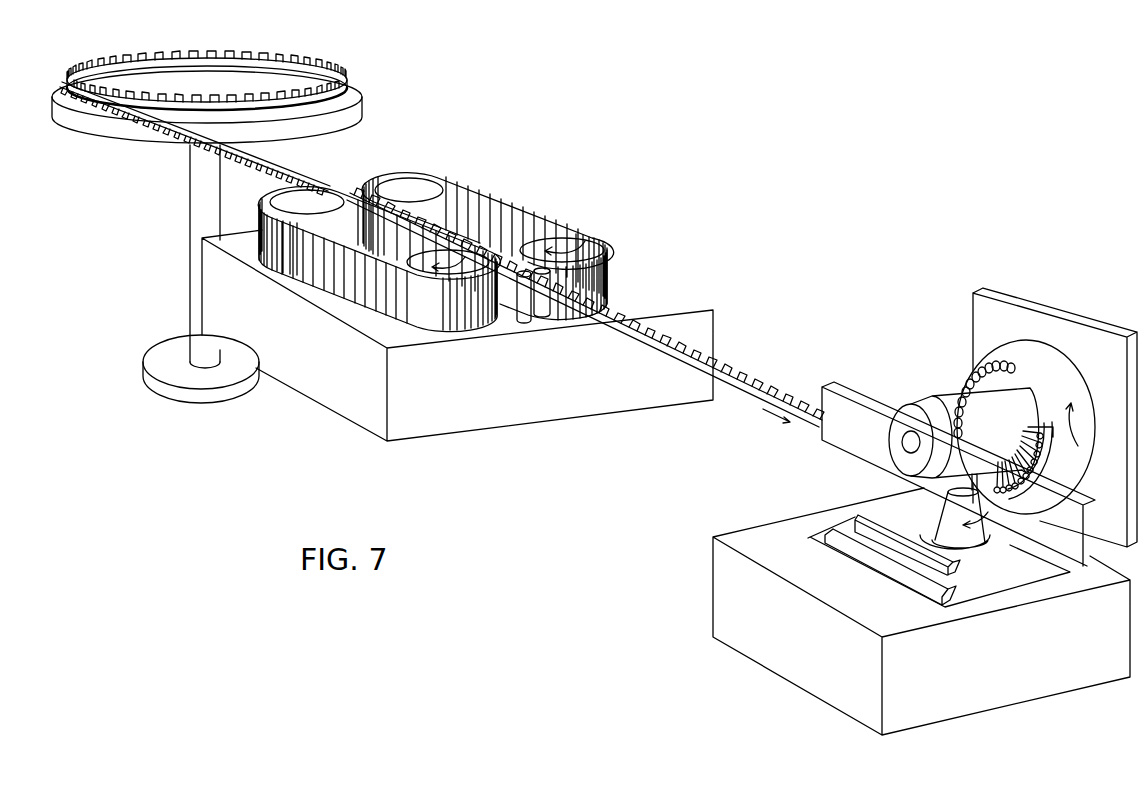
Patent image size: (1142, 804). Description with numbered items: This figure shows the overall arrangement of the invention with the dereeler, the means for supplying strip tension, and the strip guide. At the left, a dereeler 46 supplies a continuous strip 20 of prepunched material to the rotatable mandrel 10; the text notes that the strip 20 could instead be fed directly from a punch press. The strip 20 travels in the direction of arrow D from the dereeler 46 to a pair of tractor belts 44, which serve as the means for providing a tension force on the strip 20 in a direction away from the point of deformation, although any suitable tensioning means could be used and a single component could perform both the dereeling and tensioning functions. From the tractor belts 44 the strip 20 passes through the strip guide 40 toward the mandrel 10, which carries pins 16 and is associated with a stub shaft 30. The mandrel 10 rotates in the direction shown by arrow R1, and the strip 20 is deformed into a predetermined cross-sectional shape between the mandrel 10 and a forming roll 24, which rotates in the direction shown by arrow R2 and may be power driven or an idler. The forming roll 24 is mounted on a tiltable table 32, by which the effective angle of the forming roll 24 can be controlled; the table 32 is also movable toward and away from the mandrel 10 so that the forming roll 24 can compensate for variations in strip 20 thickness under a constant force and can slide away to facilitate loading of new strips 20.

The mandrel 10 is at (1057, 361).
The pins 16 is at (1010, 368).
The strip of material 20 is at (289, 168).
The forming roll 24 is at (950, 508).
The stub shaft 30 is at (940, 402).
The tiltable table 32 is at (882, 520).
The strip guide 40 is at (850, 440).
The tractor belts 44 is at (552, 199).
The dereeler 46 is at (312, 43).
The direction of belt travel D is at (757, 404).
The direction of mandrel rotation R1 is at (1088, 411).
The direction of forming roll rotation R2 is at (1000, 533).